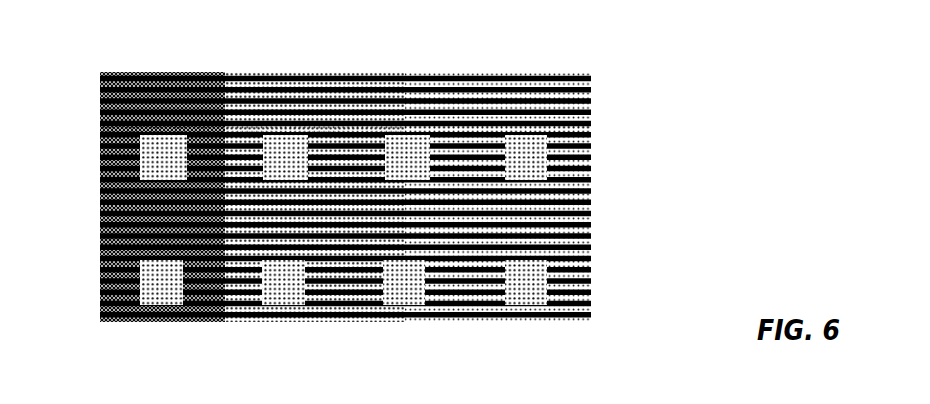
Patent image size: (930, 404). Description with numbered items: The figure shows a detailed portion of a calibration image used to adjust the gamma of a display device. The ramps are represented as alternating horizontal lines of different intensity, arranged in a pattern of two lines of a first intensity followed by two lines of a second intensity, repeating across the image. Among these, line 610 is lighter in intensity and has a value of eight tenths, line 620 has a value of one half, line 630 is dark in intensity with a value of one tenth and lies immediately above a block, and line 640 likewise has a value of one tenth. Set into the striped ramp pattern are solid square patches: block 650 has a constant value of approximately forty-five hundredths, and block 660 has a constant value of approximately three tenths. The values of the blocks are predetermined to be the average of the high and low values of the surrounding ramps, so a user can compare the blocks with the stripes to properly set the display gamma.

The line 610 is at (592, 130).
The line 620 is at (102, 128).
The line 630 is at (592, 137).
The line 640 is at (102, 133).
The block 650 is at (537, 300).
The block 660 is at (165, 306).